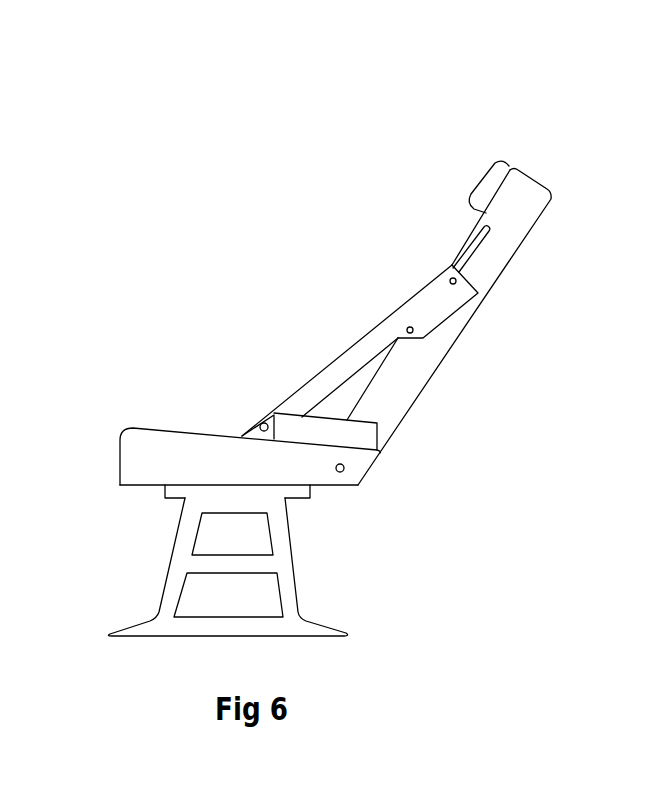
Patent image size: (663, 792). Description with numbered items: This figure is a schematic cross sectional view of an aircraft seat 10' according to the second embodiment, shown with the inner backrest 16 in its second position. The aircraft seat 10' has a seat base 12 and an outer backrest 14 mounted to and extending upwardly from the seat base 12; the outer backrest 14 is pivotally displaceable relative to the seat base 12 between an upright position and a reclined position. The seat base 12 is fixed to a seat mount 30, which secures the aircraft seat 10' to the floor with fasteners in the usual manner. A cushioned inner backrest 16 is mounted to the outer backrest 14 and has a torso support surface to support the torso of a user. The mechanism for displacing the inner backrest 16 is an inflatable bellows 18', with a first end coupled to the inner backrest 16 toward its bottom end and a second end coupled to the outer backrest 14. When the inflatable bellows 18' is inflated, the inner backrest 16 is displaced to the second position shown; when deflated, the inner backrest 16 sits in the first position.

The aircraft seat 10' is at (294, 321).
The seat base 12 is at (135, 458).
The outer backrest 14 is at (407, 385).
The inner backrest 16 is at (317, 383).
The inflatable bellows 18' is at (389, 440).
The seat mount 30 is at (300, 573).